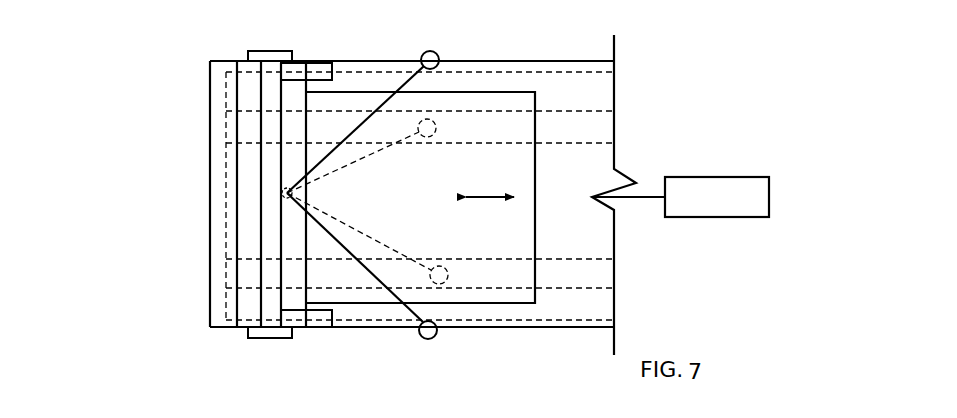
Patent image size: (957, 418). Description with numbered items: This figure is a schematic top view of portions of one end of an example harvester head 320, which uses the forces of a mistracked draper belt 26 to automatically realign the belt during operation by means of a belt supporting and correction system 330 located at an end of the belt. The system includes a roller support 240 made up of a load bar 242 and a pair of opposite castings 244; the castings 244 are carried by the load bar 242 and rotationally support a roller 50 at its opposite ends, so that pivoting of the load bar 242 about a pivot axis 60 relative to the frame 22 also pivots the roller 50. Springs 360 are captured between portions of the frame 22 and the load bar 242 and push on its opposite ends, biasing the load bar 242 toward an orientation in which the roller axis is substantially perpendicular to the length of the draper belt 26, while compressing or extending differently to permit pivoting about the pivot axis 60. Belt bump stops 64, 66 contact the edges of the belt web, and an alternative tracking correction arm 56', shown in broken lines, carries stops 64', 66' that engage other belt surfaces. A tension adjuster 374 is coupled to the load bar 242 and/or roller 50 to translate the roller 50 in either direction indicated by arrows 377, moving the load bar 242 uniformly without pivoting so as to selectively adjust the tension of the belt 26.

The harvester head 320 is at (168, 167).
The castings 244 is at (270, 50).
The springs 360 is at (318, 63).
The belt bump stop 66 is at (396, 108).
The draper belt 26 is at (570, 73).
The tension adjuster 374 is at (695, 177).
The stop 66' is at (399, 154).
The tracking correction arm 56' is at (396, 183).
The stop 64' is at (368, 238).
The arrows 377 is at (485, 200).
The pivot axis 60 is at (287, 193).
The roller 50 is at (237, 270).
The frame 22 is at (208, 302).
The belt supporting and correction system 330 is at (272, 343).
The roller support 240 is at (297, 332).
The load bar 242 is at (305, 272).
The belt bump stop 64 is at (392, 290).